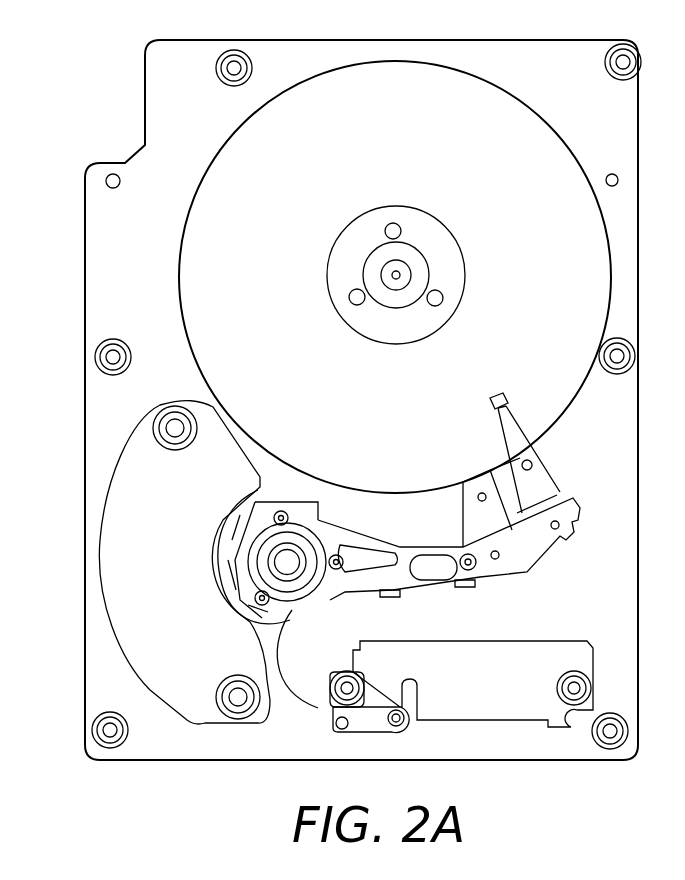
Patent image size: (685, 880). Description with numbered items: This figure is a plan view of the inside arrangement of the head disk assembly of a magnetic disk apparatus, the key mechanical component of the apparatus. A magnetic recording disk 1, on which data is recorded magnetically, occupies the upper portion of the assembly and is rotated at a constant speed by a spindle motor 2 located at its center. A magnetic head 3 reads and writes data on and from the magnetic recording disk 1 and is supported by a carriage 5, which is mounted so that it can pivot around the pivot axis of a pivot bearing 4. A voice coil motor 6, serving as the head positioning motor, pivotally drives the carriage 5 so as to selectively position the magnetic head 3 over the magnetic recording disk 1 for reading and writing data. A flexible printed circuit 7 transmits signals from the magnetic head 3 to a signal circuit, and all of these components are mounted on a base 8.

The magnetic recording disk 1 is at (568, 140).
The spindle motor 2 is at (362, 270).
The magnetic head 3 is at (508, 400).
The pivot bearing 4 is at (290, 560).
The carriage 5 is at (407, 550).
The voice coil motor 6 is at (145, 637).
The flexible printed circuit 7 is at (303, 710).
The base 8 is at (175, 58).